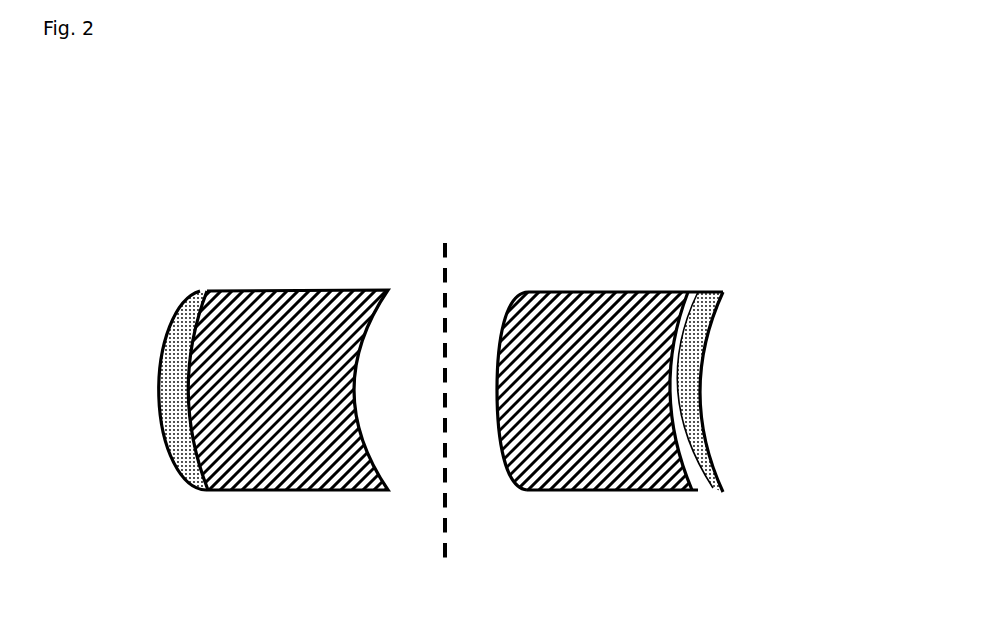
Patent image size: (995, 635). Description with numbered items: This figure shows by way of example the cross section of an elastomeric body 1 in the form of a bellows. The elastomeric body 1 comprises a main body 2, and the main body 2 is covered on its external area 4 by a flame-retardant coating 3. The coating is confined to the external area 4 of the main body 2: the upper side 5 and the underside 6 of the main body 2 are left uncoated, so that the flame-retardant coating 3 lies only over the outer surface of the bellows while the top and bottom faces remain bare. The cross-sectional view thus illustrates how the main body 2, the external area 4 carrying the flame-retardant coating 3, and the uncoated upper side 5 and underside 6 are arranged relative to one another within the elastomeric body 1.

The elastomeric body 1 is at (128, 265).
The main body 2 is at (592, 330).
The flame-retardant coating 3 is at (703, 388).
The external area 4 is at (688, 458).
The upper side 5 is at (551, 292).
The underside 6 is at (589, 492).